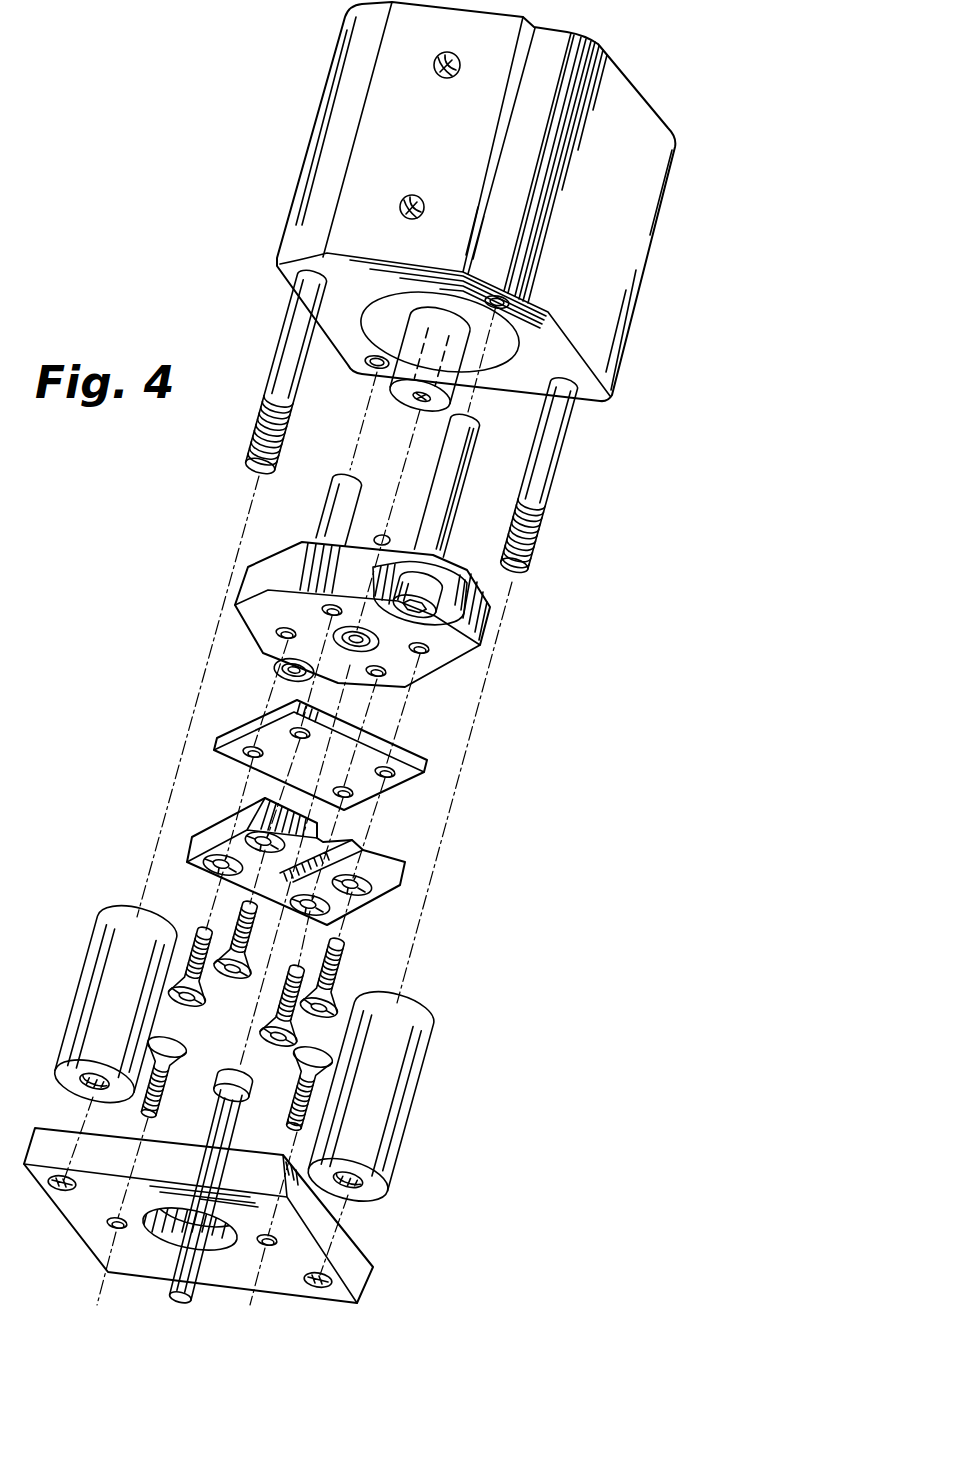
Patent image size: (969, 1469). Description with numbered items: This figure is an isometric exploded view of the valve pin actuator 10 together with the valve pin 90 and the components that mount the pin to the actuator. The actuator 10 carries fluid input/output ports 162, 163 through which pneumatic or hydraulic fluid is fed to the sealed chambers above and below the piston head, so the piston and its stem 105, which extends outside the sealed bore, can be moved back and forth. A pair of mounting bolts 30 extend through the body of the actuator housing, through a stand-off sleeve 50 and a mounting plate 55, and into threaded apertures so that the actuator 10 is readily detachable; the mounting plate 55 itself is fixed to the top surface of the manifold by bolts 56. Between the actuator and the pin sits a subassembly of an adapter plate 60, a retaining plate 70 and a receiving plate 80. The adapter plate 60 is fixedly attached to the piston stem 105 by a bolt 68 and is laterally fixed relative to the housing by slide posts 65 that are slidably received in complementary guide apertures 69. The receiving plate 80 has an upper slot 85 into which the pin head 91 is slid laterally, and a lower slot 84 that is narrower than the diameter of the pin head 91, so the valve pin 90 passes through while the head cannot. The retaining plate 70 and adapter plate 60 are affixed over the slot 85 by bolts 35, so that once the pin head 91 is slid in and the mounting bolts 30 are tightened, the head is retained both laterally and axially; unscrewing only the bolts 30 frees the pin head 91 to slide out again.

The valve pin actuator 10 is at (278, 118).
The fluid input/output port 162 is at (435, 64).
The fluid input/output port 163 is at (402, 205).
The piston stem 105 is at (413, 362).
The guide apertures 69 is at (370, 364).
The mounting bolts 30 is at (283, 337).
The slide posts 65 is at (330, 494).
The bolt 68 is at (381, 537).
The adapter plate 60 is at (456, 672).
The retaining plate 70 is at (241, 718).
The receiving plate 80 is at (228, 805).
The upper slot 85 is at (352, 840).
The lower slot 84 is at (362, 856).
The bolts 35 is at (202, 930).
The stand-off sleeve 50 is at (90, 998).
The pin head 91 is at (234, 1073).
The bolts 56 is at (166, 1102).
The mounting plate 55 is at (366, 1258).
The valve pin 90 is at (170, 1294).